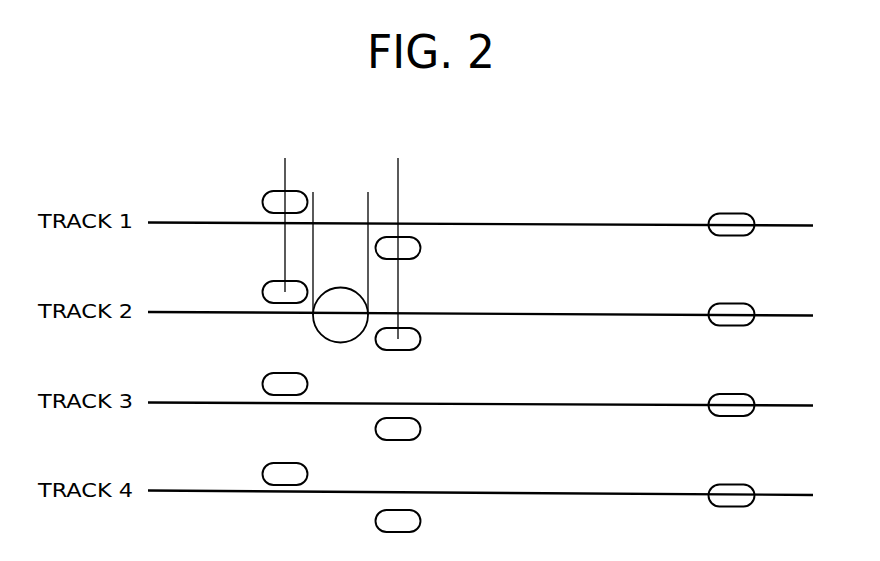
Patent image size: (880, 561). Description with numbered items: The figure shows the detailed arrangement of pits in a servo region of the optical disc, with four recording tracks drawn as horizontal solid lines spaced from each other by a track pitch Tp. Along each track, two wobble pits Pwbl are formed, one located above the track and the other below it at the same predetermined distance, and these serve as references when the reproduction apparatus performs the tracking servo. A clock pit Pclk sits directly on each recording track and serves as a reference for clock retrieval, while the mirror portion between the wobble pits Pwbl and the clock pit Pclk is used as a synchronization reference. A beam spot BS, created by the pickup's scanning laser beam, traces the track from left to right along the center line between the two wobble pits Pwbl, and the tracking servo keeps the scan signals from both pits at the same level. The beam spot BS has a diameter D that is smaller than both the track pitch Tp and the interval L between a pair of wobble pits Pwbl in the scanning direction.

The wobble pits Pwbl is at (376, 521).
The clock pit Pclk is at (713, 507).
The beam spot BS is at (349, 341).
The wobble pit interval L is at (398, 167).
The beam spot diameter D is at (368, 201).
The track pitch Tp is at (230, 223).